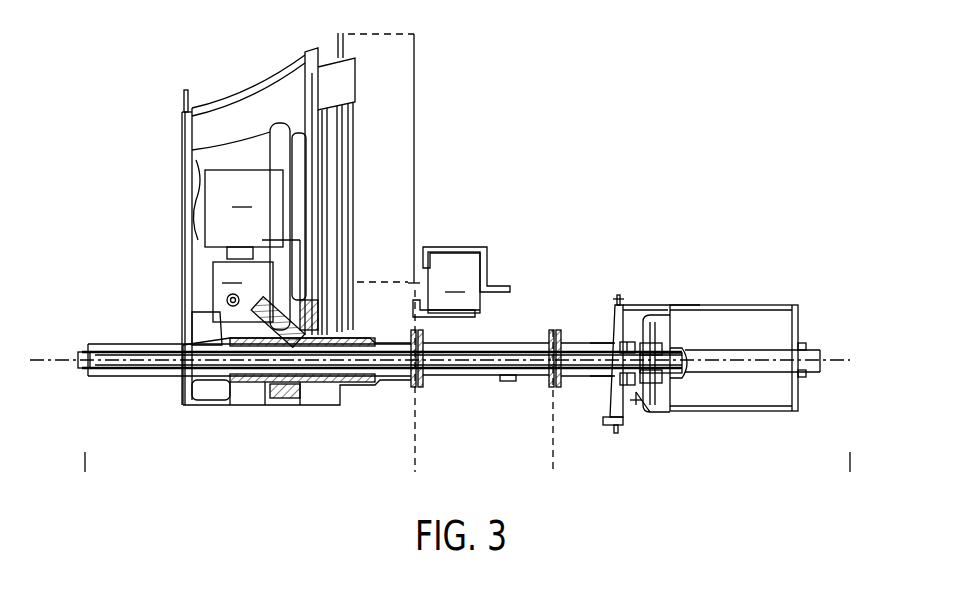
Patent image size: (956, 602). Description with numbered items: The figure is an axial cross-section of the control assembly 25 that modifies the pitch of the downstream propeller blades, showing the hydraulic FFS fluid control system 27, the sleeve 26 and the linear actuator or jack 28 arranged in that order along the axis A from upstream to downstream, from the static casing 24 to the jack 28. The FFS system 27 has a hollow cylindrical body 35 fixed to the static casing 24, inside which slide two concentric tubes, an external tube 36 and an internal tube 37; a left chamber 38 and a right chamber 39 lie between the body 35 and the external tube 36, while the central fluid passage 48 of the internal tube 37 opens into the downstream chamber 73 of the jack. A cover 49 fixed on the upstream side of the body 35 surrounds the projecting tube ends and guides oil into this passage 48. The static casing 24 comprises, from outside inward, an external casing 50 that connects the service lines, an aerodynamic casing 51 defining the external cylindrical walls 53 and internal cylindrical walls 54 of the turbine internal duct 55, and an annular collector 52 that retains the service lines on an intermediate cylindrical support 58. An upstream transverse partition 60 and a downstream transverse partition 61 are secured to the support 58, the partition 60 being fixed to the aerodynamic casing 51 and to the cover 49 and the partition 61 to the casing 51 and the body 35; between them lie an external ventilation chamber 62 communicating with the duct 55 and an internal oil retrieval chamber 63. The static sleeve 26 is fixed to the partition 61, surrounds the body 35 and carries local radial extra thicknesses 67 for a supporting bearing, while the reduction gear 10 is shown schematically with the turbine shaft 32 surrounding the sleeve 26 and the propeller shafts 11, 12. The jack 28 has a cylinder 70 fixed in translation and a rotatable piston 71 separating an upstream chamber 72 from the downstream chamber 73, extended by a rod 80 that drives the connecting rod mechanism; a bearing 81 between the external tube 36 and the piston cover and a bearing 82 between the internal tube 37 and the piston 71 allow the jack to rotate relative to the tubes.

The axis A is at (50, 363).
The reduction gear 10 is at (461, 282).
The propeller shaft 11 is at (488, 257).
The internal drive shaft of the downstream propeller 12 is at (505, 288).
The static casing 24 is at (358, 177).
The control assembly 25 is at (332, 488).
The sleeve 26 is at (483, 385).
The FFS fluid control system 27 is at (85, 462).
The linear actuator (jack) 28 is at (553, 462).
The turbine shaft 32 is at (462, 320).
The hollow body 35 is at (335, 320).
The external tube 36 is at (215, 345).
The internal tube 37 is at (310, 382).
The left chamber 38 is at (280, 382).
The right chamber 39 is at (335, 395).
The central fluid passage 48 is at (163, 370).
The cover 49 is at (133, 376).
The external casing 50 is at (184, 97).
The aerodynamic casing 51 is at (183, 140).
The annular collector 52 is at (262, 244).
The external cylindrical walls 53 is at (202, 108).
The internal cylindrical walls 54 is at (203, 152).
The internal duct 55 is at (247, 118).
The intermediate cylindrical support 58 is at (215, 263).
The upstream transverse partition 60 is at (200, 216).
The downstream transverse partition 61 is at (282, 224).
The external chamber 62 is at (244, 214).
The internal chamber 63 is at (243, 292).
The local radial extra thicknesses 67 is at (510, 382).
The cylinder (external part of the jack) 70 is at (620, 305).
The piston 71 is at (660, 320).
The upstream chamber 72 is at (630, 328).
The downstream chamber 73 is at (740, 325).
The rod 80 is at (810, 380).
The bearing 81 is at (612, 398).
The bearing 82 is at (650, 412).